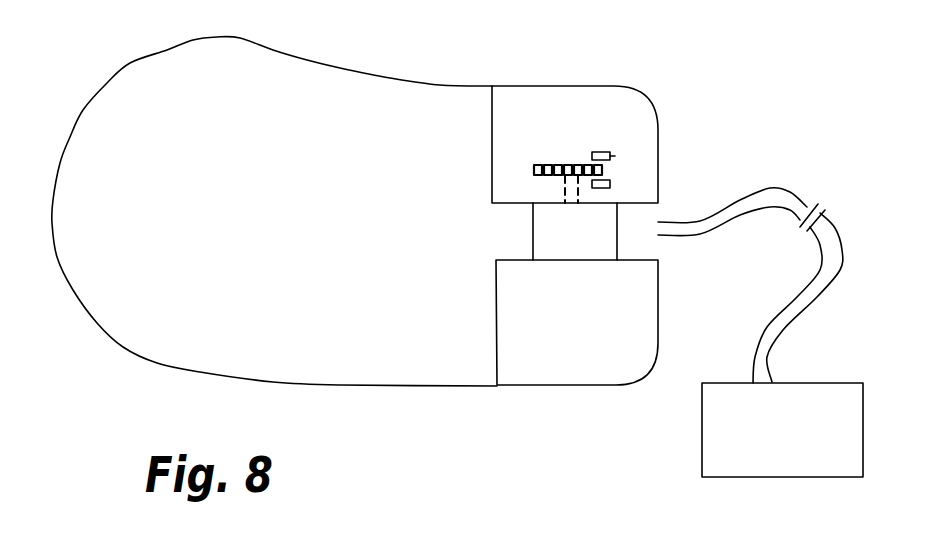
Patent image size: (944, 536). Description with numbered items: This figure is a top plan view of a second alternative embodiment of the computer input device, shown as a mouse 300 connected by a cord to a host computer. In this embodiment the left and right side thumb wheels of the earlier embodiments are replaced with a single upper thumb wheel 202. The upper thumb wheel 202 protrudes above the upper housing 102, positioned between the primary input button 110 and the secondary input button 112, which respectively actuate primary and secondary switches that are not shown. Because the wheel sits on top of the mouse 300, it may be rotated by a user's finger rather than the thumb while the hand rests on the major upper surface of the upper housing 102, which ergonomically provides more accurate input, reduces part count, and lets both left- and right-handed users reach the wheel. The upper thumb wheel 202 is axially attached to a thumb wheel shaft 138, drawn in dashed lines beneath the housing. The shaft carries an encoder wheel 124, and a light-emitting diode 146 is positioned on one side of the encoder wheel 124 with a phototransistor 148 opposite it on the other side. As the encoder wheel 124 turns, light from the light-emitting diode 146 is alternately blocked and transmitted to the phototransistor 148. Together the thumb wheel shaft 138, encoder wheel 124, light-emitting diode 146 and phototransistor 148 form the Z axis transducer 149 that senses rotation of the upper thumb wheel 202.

The mouse 300 is at (457, 255).
The upper housing 102 is at (215, 353).
The primary input button 110 is at (514, 100).
The secondary input button 112 is at (543, 363).
The upper thumb wheel 202 is at (572, 243).
The encoder wheel 124 is at (557, 161).
The phototransistor 148 is at (614, 156).
The light-emitting diode 146 is at (612, 183).
The thumb wheel shaft 138 is at (587, 197).
The Z axis transducer 149 is at (516, 178).